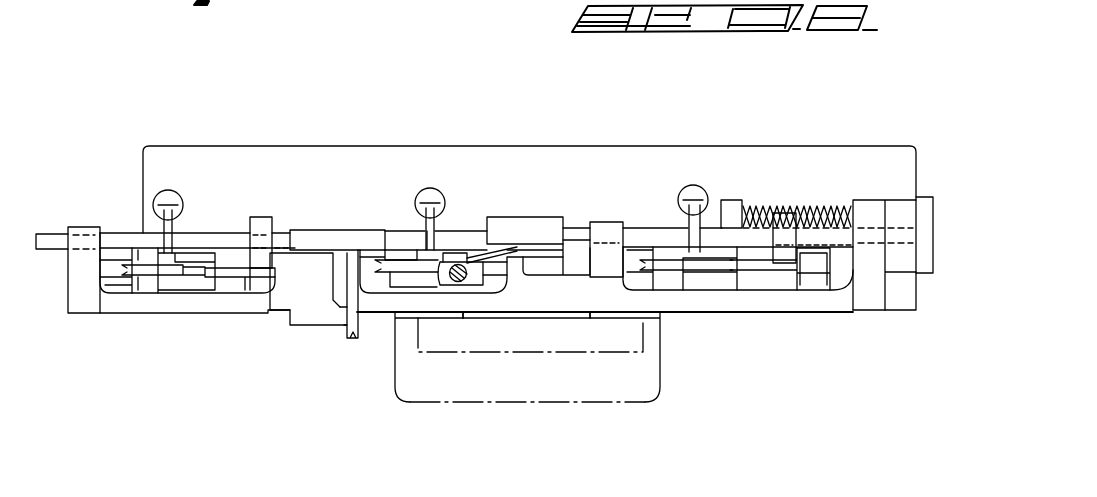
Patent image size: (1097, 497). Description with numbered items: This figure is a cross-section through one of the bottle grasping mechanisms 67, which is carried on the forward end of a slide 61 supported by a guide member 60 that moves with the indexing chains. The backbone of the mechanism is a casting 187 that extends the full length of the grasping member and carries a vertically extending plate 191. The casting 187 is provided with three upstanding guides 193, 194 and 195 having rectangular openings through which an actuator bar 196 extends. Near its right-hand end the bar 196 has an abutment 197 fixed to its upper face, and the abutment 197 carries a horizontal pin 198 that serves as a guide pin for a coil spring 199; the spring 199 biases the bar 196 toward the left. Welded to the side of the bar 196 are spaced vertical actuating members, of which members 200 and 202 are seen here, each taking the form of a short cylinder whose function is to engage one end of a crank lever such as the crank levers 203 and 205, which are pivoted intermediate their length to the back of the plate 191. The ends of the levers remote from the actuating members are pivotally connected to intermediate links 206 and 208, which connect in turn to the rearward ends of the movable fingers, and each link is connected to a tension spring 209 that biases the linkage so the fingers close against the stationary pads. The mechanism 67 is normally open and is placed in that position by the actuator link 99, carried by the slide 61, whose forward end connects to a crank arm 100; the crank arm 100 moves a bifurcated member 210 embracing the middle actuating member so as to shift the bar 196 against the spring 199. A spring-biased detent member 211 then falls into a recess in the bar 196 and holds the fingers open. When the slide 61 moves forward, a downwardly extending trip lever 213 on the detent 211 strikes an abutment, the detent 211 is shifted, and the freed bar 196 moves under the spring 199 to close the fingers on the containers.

The guide member 60 is at (570, 380).
The slide 61 is at (498, 340).
The grasping mechanism 67 is at (487, 132).
The actuator link 99 is at (460, 285).
The crank arm 100 is at (480, 258).
The casting 187 is at (115, 303).
The vertically extending plate 191 is at (598, 108).
The upstanding guide 193 is at (100, 190).
The upstanding guide 194 is at (640, 180).
The upstanding guide 195 is at (864, 210).
The actuator bar 196 is at (116, 233).
The abutment 197 is at (728, 200).
The pin 198 is at (771, 212).
The coil spring 199 is at (830, 204).
The actuating member 200 is at (290, 180).
The actuating member 202 is at (783, 235).
The crank lever 203 is at (233, 270).
The crank lever 205 is at (817, 253).
The intermediate link 206 is at (193, 258).
The intermediate link 208 is at (720, 252).
The tension spring 209 is at (218, 120).
The bifurcated member 210 is at (545, 175).
The detent member 211 is at (375, 175).
The trip lever 213 is at (350, 333).